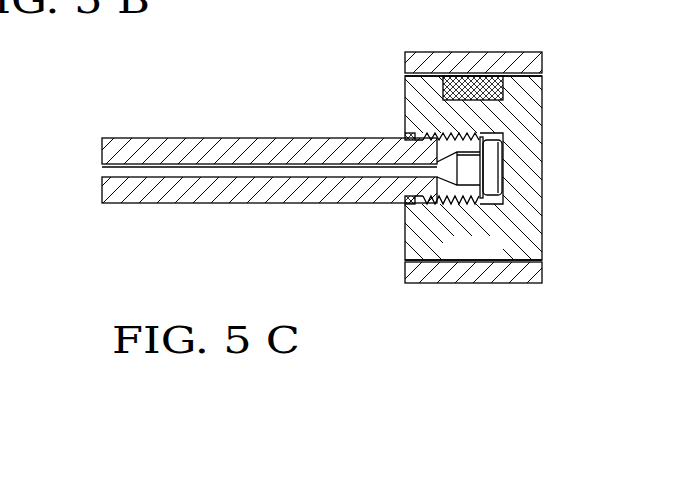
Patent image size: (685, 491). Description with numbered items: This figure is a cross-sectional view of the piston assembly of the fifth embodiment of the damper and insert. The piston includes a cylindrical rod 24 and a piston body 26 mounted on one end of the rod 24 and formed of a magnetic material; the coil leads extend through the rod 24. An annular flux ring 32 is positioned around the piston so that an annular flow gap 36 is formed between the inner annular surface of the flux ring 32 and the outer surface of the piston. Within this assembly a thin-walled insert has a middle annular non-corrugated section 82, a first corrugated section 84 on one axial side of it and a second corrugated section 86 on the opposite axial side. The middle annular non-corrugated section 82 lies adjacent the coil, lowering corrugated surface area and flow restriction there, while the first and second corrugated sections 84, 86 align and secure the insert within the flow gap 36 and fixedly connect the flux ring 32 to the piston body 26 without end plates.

The cylindrical rod 24 is at (188, 143).
The piston body 26 is at (528, 102).
The annular flux ring 32 is at (424, 274).
The annular flow gap 36 is at (541, 261).
The middle annular non-corrugated section 82 is at (481, 73).
The first corrugated section 84 is at (422, 73).
The second corrugated section 86 is at (522, 72).